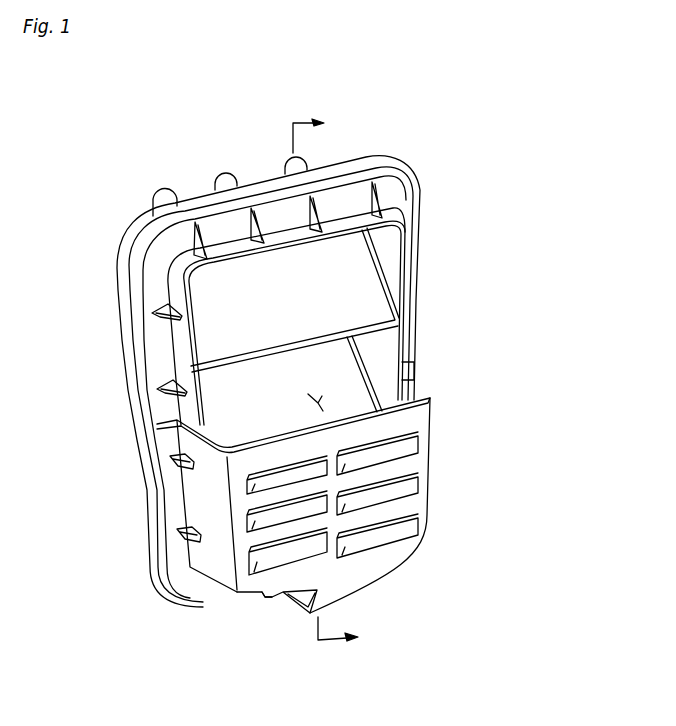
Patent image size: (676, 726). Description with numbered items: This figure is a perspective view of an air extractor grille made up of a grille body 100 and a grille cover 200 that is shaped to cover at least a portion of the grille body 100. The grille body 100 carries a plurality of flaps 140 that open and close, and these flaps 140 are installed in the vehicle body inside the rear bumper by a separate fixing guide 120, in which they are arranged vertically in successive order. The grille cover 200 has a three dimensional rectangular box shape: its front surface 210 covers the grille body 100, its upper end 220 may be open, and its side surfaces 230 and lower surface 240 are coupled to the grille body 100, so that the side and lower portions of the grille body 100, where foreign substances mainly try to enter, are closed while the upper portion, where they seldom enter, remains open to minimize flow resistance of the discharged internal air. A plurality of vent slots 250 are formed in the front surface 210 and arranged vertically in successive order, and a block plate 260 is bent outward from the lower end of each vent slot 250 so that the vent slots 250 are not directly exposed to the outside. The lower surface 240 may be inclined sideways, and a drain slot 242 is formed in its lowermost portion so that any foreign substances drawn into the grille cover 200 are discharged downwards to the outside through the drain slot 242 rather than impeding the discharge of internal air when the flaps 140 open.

The grille body 100 is at (492, 283).
The fixing guide 120 is at (403, 193).
The flap 140 is at (347, 283).
The grille cover 200 is at (487, 478).
The front surface 210 is at (430, 422).
The upper end 220 is at (322, 396).
The side surface 230 is at (200, 497).
The lower surface 240 is at (357, 593).
The drain slot 242 is at (270, 610).
The vent slot 250 is at (437, 508).
The block plate 260 is at (400, 538).